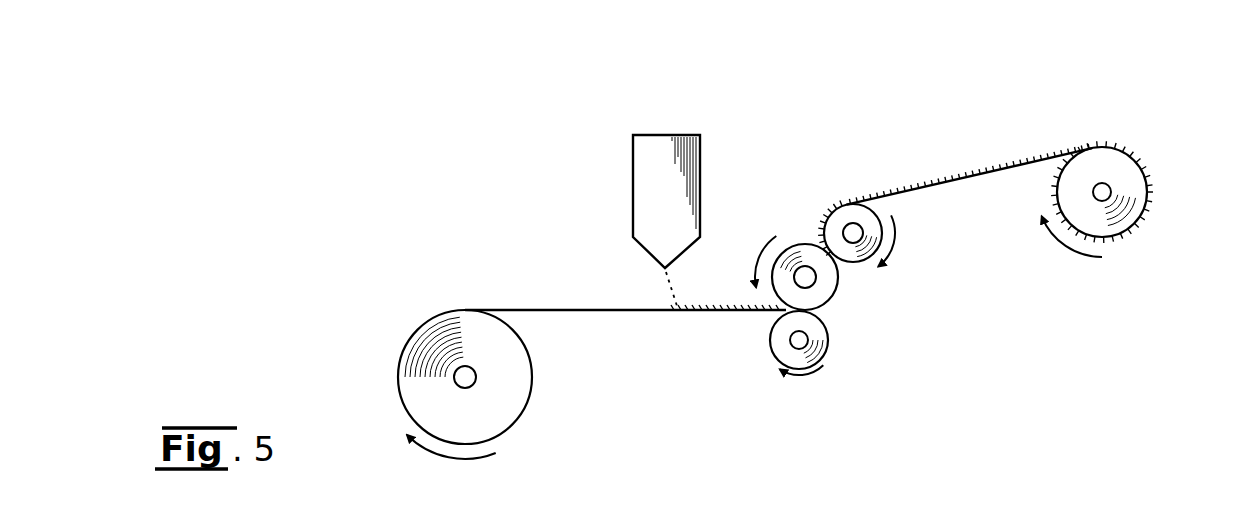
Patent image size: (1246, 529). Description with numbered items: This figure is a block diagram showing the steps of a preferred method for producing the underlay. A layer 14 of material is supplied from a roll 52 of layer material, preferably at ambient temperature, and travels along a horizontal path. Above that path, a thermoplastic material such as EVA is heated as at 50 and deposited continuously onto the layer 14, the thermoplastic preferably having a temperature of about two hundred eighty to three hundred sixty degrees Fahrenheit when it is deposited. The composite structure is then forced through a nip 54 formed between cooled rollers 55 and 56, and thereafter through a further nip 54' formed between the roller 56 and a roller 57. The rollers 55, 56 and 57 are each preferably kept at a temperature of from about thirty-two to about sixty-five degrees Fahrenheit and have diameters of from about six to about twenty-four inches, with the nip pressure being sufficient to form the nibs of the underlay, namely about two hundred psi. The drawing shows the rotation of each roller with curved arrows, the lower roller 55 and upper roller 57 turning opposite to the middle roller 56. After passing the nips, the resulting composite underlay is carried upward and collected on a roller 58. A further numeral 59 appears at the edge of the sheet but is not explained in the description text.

The layer 14 is at (568, 311).
The thermoplastic material heating station 50 is at (663, 122).
The roll 52 is at (400, 400).
The nip 54 is at (749, 361).
The nip 54' is at (906, 277).
The cooled roller 55 is at (840, 350).
The cooled roller 56 is at (852, 295).
The roller 57 is at (905, 237).
The roller 58 is at (1128, 238).
The reference numeral 59 is at (1171, 521).